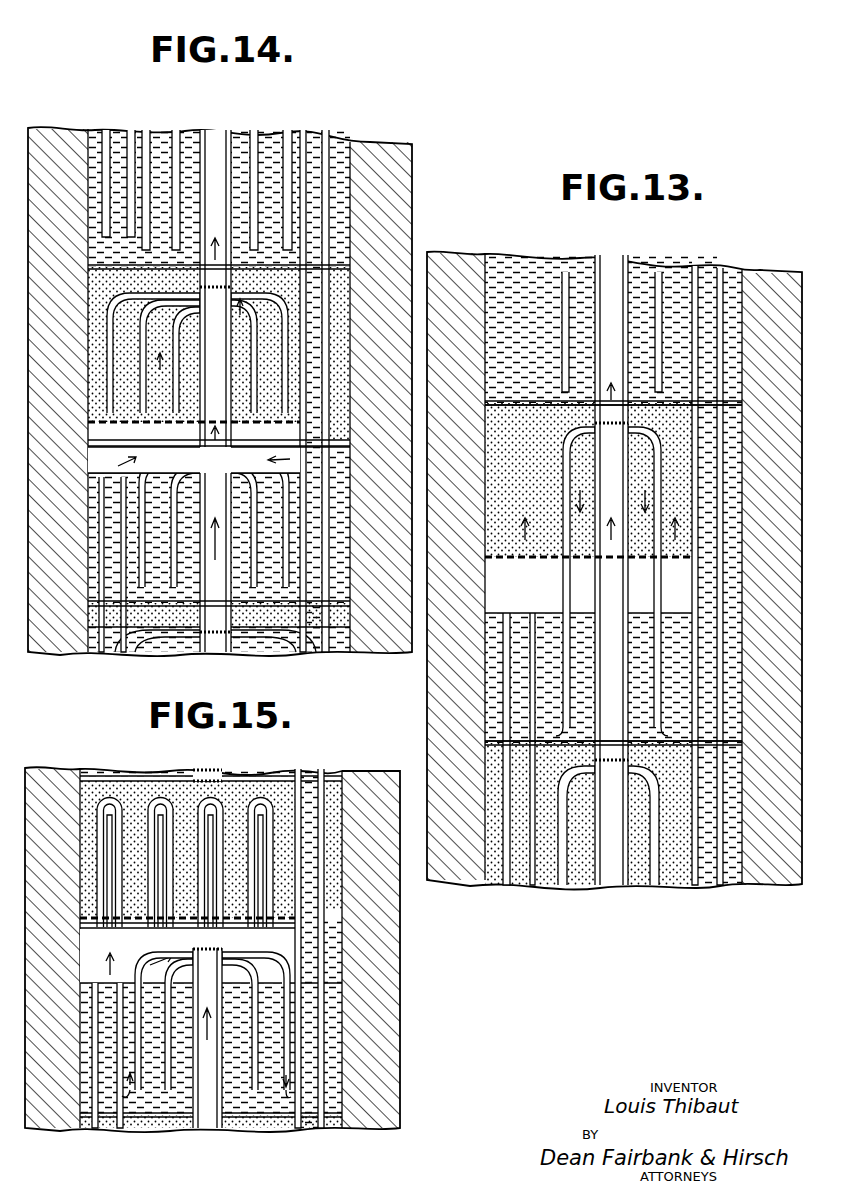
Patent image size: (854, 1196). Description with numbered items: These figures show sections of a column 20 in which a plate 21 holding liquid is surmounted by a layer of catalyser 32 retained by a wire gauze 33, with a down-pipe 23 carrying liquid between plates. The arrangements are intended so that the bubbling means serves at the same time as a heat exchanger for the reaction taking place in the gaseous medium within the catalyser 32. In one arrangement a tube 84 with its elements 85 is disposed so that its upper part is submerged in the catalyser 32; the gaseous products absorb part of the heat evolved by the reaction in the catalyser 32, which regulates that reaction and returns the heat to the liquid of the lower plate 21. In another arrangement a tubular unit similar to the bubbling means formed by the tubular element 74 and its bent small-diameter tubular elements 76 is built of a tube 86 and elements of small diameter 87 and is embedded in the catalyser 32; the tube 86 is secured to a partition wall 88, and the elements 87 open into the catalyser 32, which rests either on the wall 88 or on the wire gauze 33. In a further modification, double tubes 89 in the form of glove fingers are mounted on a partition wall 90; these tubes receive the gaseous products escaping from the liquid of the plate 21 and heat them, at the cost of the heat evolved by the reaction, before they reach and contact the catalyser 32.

In FIG. 14, the column 20 is at (378, 148).
In FIG. 13, the column 20 is at (453, 268).
In FIG. 15, the column 20 is at (373, 771).
In FIG. 14, the plate 21 is at (327, 645).
In FIG. 13, the plate 21 is at (492, 400).
In FIG. 15, the plate 21 is at (313, 1125).
In FIG. 14, the down-pipe 23 is at (322, 130).
In FIG. 13, the down-pipe 23 is at (715, 335).
In FIG. 15, the down-pipe 23 is at (308, 857).
In FIG. 14, the catalyser 32 is at (338, 309).
In FIG. 13, the catalyser 32 is at (487, 465).
In FIG. 15, the catalyser 32 is at (82, 856).
In FIG. 14, the wire gauze 33 is at (100, 423).
In FIG. 13, the wire gauze 33 is at (673, 558).
In FIG. 15, the wire gauze 33 is at (82, 920).
In FIG. 14, the tubular element 74 is at (215, 570).
In FIG. 15, the tubular element 74 is at (225, 947).
In FIG. 14, the tubular elements of small diameter 76 is at (283, 533).
In FIG. 15, the tubular elements of small diameter 76 is at (283, 972).
In FIG. 13, the tube 84 is at (595, 571).
In FIG. 13, the elements 85 is at (562, 594).
In FIG. 14, the tube 86 is at (210, 383).
In FIG. 14, the elements of small diameter 87 is at (120, 355).
In FIG. 14, the partition wall 88 is at (102, 447).
In FIG. 15, the double tubes 89 is at (268, 817).
In FIG. 15, the partition wall 90 is at (140, 930).